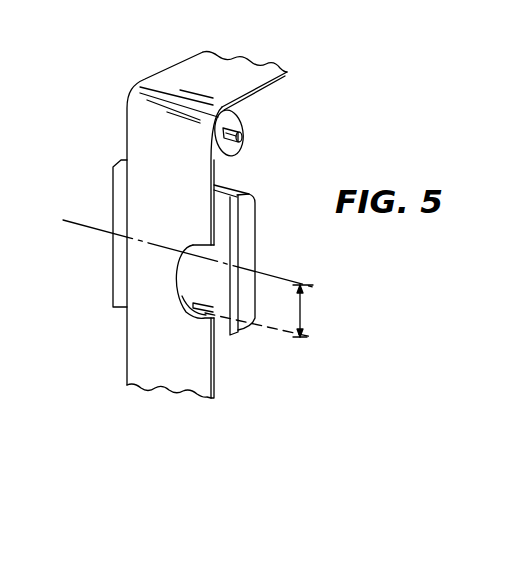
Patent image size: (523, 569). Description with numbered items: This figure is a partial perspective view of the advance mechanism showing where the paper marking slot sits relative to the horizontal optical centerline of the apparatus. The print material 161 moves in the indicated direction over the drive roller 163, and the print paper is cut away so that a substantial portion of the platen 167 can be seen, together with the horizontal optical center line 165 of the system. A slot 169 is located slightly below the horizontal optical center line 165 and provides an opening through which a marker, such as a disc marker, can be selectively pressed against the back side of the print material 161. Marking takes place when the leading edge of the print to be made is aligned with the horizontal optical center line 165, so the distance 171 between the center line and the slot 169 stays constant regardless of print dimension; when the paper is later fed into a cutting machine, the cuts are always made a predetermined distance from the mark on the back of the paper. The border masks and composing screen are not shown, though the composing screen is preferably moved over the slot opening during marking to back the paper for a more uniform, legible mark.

The print material 161 is at (189, 66).
The drive roller 163 is at (242, 136).
The horizontal optical center line 165 is at (76, 218).
The platen 167 is at (227, 333).
The slot 169 is at (195, 305).
The distance 171 is at (300, 305).